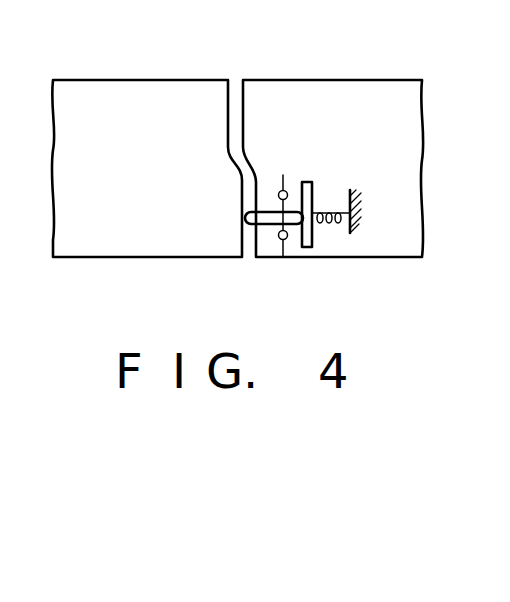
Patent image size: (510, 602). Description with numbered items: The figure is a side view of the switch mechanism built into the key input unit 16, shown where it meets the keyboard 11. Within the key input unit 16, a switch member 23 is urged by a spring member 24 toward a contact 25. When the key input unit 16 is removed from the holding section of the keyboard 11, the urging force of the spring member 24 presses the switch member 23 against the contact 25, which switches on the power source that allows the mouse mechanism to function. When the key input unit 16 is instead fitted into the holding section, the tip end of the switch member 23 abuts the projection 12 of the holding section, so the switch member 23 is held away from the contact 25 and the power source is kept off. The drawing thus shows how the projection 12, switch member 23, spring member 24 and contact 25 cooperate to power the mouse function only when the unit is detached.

The keyboard 11 is at (163, 88).
The key input unit 16 is at (350, 86).
The projection 12 is at (243, 243).
The switch member 23 is at (306, 247).
The spring member 24 is at (332, 210).
The contact 25 is at (279, 199).